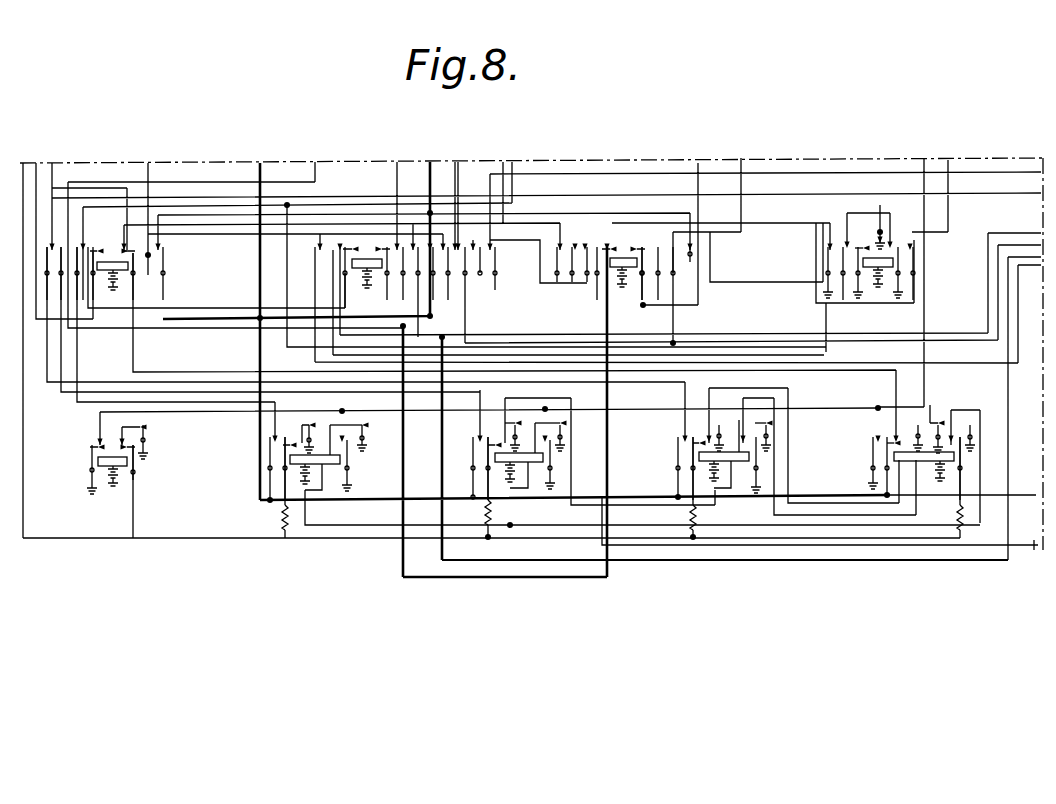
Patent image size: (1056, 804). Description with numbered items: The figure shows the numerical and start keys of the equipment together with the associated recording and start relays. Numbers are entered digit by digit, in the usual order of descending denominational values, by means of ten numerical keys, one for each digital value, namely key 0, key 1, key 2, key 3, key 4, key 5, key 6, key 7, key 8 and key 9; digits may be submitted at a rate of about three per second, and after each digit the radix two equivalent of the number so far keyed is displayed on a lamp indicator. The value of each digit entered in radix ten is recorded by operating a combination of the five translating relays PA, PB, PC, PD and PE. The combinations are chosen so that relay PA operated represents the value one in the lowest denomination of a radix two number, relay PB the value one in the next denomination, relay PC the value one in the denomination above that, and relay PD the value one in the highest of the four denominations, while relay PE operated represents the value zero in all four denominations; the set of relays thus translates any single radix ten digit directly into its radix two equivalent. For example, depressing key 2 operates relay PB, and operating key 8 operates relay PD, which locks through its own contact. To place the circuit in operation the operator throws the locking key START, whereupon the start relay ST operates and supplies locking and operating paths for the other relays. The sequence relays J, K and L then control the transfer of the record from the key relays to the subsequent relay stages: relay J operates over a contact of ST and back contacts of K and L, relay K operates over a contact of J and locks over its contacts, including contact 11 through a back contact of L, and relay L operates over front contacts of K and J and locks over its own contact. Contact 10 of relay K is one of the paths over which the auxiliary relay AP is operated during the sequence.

The key 0 is at (146, 435).
The key 1 is at (557, 373).
The key 2 is at (463, 370).
The key 3 is at (492, 373).
The key 4 is at (489, 349).
The key 5 is at (507, 349).
The key 6 is at (434, 348).
The key 7 is at (550, 350).
The key 8 is at (485, 350).
The key 9 is at (345, 363).
The relay contact 10 is at (439, 273).
The relay contact 11 is at (344, 277).
The relay L is at (106, 262).
The relay K is at (366, 255).
The relay J is at (620, 259).
The start relay ST is at (862, 262).
The start key START is at (880, 220).
The translating relay PE is at (111, 457).
The translating relay PD is at (324, 460).
The translating relay PC is at (530, 462).
The translating relay PB is at (735, 461).
The translating relay PA is at (924, 461).